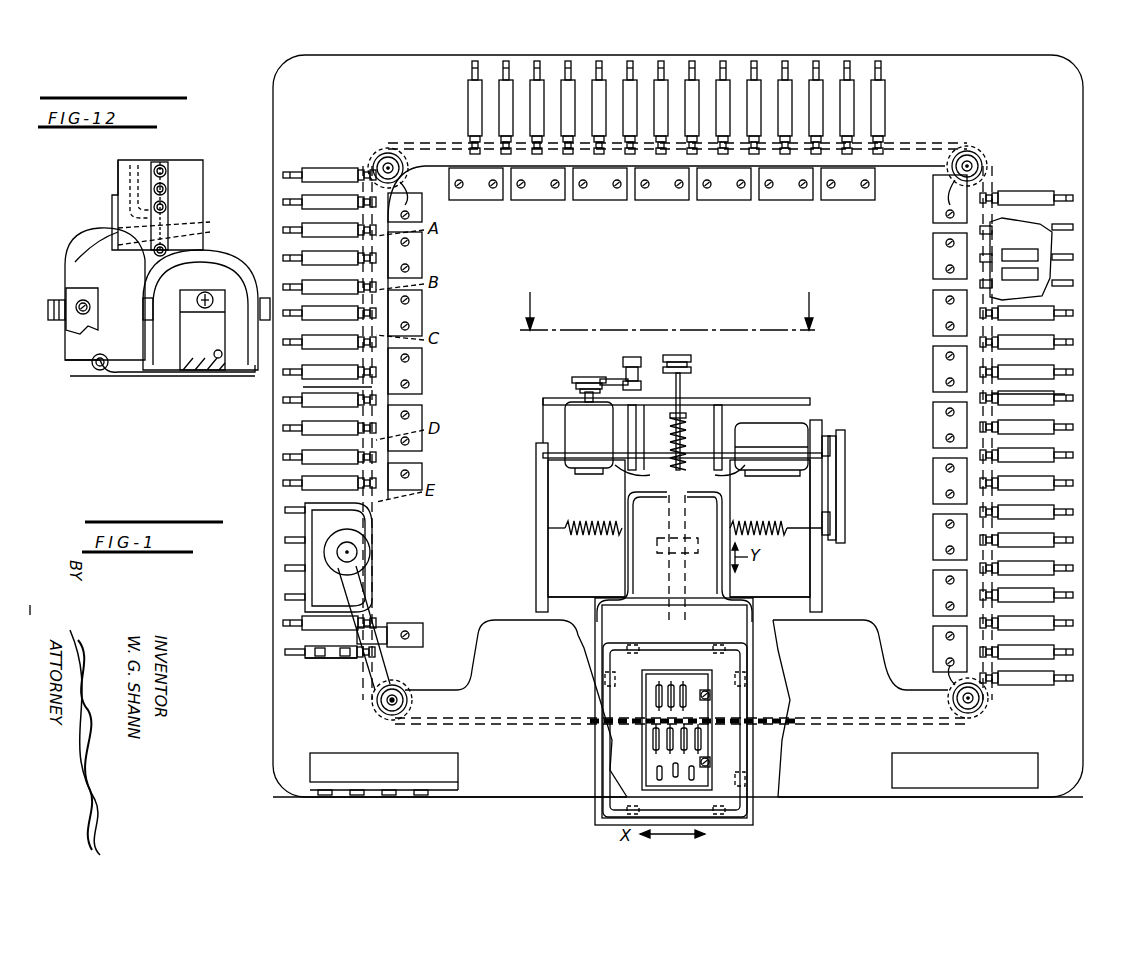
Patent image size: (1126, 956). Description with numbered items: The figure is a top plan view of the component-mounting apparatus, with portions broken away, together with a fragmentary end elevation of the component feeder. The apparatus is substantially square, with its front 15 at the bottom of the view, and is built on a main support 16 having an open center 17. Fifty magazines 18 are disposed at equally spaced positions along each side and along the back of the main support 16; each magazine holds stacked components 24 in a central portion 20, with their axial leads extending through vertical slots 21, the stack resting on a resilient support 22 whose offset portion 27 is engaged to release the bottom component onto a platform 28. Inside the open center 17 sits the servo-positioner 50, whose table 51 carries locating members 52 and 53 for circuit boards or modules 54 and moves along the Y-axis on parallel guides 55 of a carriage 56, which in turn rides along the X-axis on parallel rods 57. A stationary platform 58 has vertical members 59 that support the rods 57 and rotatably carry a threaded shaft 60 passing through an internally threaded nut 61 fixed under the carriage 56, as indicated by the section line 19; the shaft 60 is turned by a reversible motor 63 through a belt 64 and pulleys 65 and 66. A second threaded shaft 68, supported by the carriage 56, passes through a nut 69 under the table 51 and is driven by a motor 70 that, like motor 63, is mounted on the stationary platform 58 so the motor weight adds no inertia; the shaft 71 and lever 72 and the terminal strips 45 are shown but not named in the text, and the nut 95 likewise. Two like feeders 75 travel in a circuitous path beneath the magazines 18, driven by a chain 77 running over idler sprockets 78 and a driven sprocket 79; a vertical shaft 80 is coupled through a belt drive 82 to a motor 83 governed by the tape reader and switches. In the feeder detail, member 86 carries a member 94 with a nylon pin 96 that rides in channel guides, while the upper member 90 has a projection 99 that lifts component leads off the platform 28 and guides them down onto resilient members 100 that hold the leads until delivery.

In FIG. 1, the front 15 is at (525, 805).
In FIG. 1, the main support 16 is at (1068, 112).
In FIG. 1, the open center 17 is at (905, 182).
In FIG. 1, the magazines 18 is at (506, 96).
In FIG. 1, the section line 19 is at (670, 301).
In FIG. 1, the central portions 20 is at (330, 658).
In FIG. 12, the central portions 20 is at (112, 255).
In FIG. 1, the vertical slots 21 is at (345, 650).
In FIG. 12, the vertical slots 21 is at (160, 165).
In FIG. 12, the resilient support 22 is at (168, 218).
In FIG. 12, the stack of components 24 is at (168, 170).
In FIG. 12, the offset portion 27 is at (125, 181).
In FIG. 12, the platform 28 is at (185, 265).
In FIG. 1, the terminal strips 45 is at (568, 153).
In FIG. 1, the servo-positioner 50 is at (522, 490).
In FIG. 1, the table 51 is at (750, 626).
In FIG. 1, the locating member 52 is at (725, 652).
In FIG. 1, the locating member 53 is at (705, 680).
In FIG. 1, the circuit boards or modules 54 is at (668, 782).
In FIG. 1, the parallel guides 55 is at (712, 477).
In FIG. 1, the carriage 56 is at (726, 398).
In FIG. 1, the parallel rods 57 is at (765, 600).
In FIG. 1, the platform 58 is at (812, 401).
In FIG. 1, the vertical members 59 is at (540, 550).
In FIG. 1, the threaded shaft 60 is at (588, 528).
In FIG. 1, the internally threaded nut 61 is at (768, 452).
In FIG. 1, the reversible motor 63 is at (754, 426).
In FIG. 1, the belt 64 is at (846, 484).
In FIG. 1, the pulley 65 is at (846, 446).
In FIG. 1, the pulley 66 is at (846, 520).
In FIG. 1, the threaded shaft 68 is at (692, 357).
In FIG. 1, the nut 69 is at (692, 536).
In FIG. 1, the motor 70 is at (587, 473).
In FIG. 1, the shaft 71 is at (671, 372).
In FIG. 1, the lever 72 is at (618, 353).
In FIG. 1, the feeders 75 is at (303, 387).
In FIG. 12, the feeders 75 is at (86, 238).
In FIG. 1, the chain 77 is at (372, 522).
In FIG. 12, the chain 77 is at (55, 299).
In FIG. 1, the idler sprockets 78 is at (382, 150).
In FIG. 1, the driven sprocket 79 is at (414, 700).
In FIG. 1, the vertical shaft 80 is at (387, 706).
In FIG. 1, the belt drive 82 is at (352, 588).
In FIG. 1, the motor 83 is at (350, 526).
In FIG. 12, the member 86 is at (225, 262).
In FIG. 12, the member 90 is at (75, 250).
In FIG. 12, the member 94 is at (202, 355).
In FIG. 12, the block 95 is at (70, 326).
In FIG. 12, the nylon pin 96 is at (222, 358).
In FIG. 12, the projection 99 is at (176, 229).
In FIG. 12, the resilient members 100 is at (118, 376).